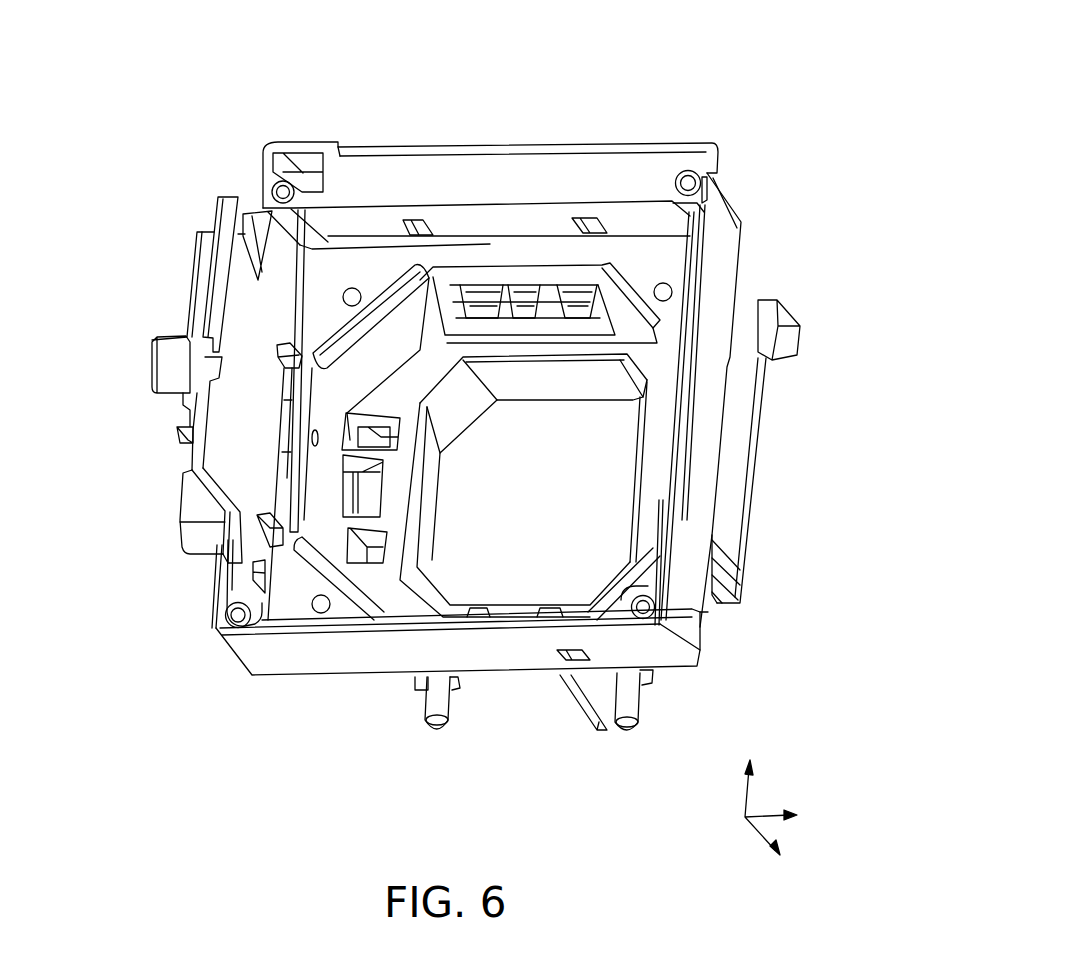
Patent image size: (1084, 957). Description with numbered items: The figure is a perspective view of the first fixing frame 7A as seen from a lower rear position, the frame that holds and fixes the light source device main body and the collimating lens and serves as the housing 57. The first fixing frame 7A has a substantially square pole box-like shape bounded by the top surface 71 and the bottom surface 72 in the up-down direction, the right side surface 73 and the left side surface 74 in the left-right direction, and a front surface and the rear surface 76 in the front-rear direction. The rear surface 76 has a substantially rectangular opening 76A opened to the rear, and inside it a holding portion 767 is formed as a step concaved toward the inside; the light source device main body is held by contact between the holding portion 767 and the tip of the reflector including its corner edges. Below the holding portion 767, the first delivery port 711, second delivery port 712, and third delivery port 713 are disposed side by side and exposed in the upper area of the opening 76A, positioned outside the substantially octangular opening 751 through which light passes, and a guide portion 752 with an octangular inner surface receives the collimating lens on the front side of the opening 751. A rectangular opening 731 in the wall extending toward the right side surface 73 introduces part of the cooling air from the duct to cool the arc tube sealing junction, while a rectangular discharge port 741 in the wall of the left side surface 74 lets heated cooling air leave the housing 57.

The housing 57 is at (712, 80).
The top surface 71 is at (632, 124).
The first fixing frame 7A is at (743, 238).
The bottom surface 72 is at (527, 707).
The right side surface 73 is at (171, 457).
The rectangular opening 731 is at (422, 501).
The left side surface 74 is at (757, 505).
The discharge port 741 is at (728, 532).
The opening 751 is at (641, 474).
The guide portion 752 is at (613, 388).
The rear surface 76 is at (240, 310).
The rectangular opening 76A is at (379, 140).
The holding portion 767 is at (338, 272).
The first delivery port 711 is at (530, 297).
The second delivery port 712 is at (475, 293).
The third delivery port 713 is at (570, 293).